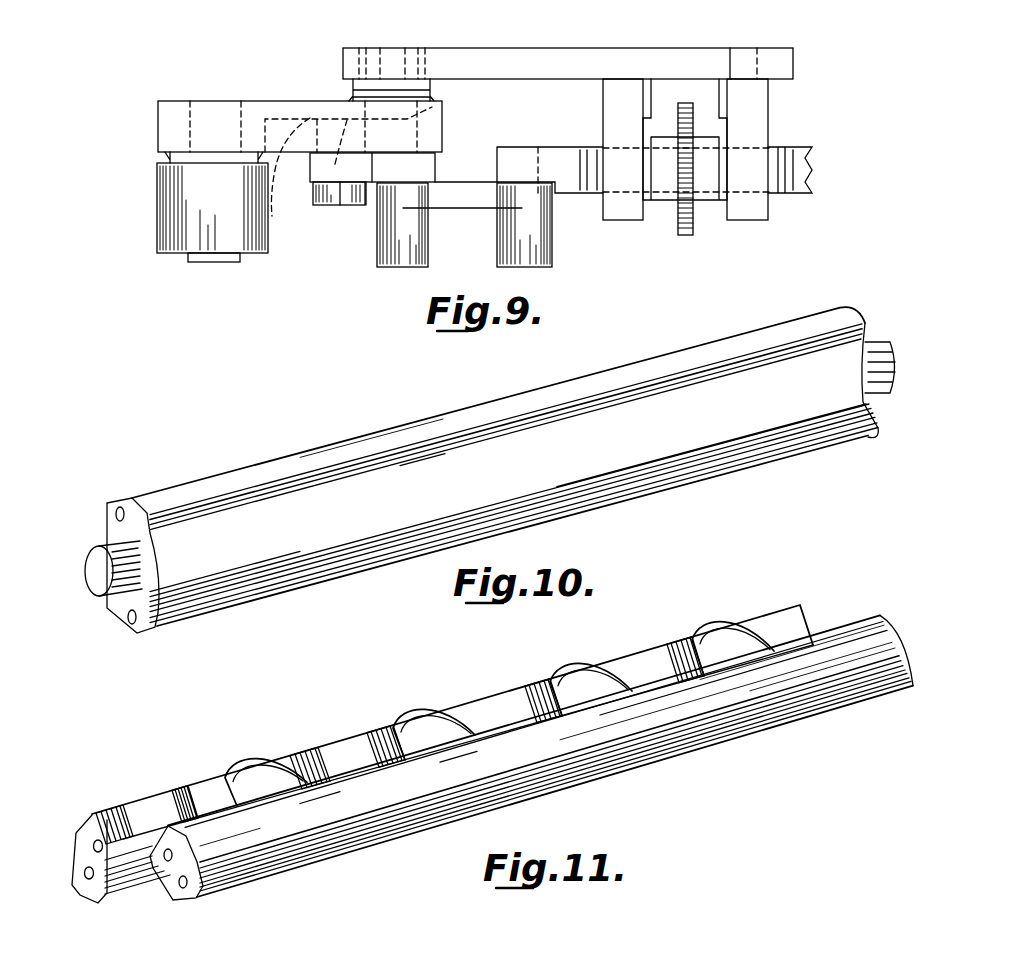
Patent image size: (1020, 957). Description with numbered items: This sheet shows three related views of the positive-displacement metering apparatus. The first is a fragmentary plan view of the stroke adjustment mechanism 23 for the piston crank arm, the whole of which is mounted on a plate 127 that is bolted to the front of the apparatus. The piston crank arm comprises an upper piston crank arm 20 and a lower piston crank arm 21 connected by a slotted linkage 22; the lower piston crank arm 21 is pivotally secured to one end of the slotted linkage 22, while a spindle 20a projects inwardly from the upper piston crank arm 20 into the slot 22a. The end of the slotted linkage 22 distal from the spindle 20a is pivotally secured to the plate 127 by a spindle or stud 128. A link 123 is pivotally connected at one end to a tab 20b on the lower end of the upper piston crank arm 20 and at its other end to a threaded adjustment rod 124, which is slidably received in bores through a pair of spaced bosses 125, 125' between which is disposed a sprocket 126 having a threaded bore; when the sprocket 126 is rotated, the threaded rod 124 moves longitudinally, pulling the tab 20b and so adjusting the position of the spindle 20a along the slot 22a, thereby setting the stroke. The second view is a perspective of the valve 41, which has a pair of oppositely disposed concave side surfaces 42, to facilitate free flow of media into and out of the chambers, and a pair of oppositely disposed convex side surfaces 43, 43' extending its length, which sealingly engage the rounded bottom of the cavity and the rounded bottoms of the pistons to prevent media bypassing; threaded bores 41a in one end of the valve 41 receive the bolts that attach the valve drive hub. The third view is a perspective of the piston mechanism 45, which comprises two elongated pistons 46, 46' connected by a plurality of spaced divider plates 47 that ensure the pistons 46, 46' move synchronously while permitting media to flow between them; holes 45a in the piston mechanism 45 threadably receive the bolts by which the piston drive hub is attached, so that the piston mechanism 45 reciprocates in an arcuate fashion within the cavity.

In FIG. 9, the upper piston crank arm 20 is at (363, 207).
In FIG. 9, the spindle 20a is at (323, 213).
In FIG. 9, the tab 20b is at (437, 167).
In FIG. 9, the lower piston crank arm 21 is at (253, 237).
In FIG. 9, the slotted linkage 22 is at (252, 101).
In FIG. 9, the slot 22a is at (290, 178).
In FIG. 9, the stroke adjustment mechanism 23 is at (735, 244).
In FIG. 9, the link 123 is at (465, 210).
In FIG. 9, the threaded adjustment rod 124 is at (815, 112).
In FIG. 9, the spaced boss 125 is at (595, 149).
In FIG. 9, the spaced boss 125' is at (791, 144).
In FIG. 9, the sprocket 126 is at (705, 258).
In FIG. 9, the plate 127 is at (542, 52).
In FIG. 9, the spindle or stud 128 is at (440, 100).
In FIG. 10, the valve 41 is at (316, 448).
In FIG. 10, the threaded bore 41a is at (104, 515).
In FIG. 10, the concave side surface 42 is at (98, 533).
In FIG. 10, the convex side surface 43 is at (506, 424).
In FIG. 10, the lower guide surface 43' is at (601, 506).
In FIG. 11, the piston mechanism 45 is at (638, 779).
In FIG. 11, the hole 45a is at (181, 884).
In FIG. 11, the piston 46 is at (434, 754).
In FIG. 11, the piston 46' is at (540, 756).
In FIG. 11, the divider plate 47 is at (260, 762).